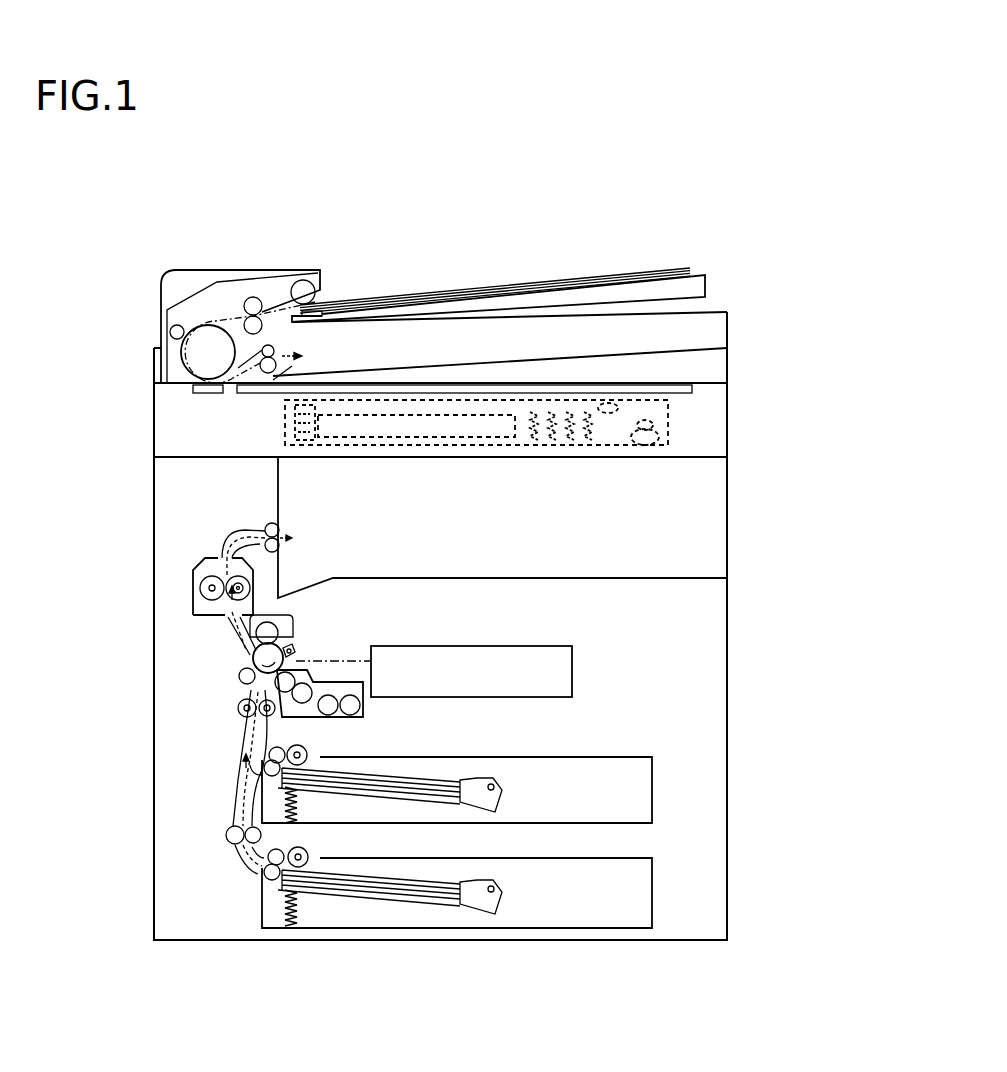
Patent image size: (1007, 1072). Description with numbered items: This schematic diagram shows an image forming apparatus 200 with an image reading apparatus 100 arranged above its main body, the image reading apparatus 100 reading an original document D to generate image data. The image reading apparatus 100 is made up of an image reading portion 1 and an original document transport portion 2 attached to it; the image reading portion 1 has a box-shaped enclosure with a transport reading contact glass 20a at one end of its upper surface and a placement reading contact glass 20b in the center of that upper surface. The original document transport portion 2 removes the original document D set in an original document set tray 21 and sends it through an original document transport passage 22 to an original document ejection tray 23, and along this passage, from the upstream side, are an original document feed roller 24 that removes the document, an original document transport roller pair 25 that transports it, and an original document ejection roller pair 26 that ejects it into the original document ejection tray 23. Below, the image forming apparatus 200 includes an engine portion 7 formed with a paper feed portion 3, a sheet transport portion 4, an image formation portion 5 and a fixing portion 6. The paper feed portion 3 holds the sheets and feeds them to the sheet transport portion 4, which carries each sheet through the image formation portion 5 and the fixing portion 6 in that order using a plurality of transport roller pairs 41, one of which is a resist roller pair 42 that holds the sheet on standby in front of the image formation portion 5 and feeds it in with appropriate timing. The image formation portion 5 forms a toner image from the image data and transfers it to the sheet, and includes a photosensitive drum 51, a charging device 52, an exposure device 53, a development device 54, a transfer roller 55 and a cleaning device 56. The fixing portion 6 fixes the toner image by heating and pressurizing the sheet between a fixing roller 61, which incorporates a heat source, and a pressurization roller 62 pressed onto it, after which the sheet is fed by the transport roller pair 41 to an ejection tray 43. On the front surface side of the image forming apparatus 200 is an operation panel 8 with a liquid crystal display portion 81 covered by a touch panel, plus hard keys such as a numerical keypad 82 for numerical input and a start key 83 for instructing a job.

The image forming apparatus 200 is at (135, 325).
The original document transport passage 22 is at (199, 323).
The original document transport roller pair 25 is at (253, 297).
The original document feed roller 24 is at (303, 280).
The original document ejection roller pair 26 is at (278, 372).
The original document D is at (561, 280).
The original document set tray 21 is at (698, 277).
The original document transport portion 2 is at (739, 331).
The original document ejection tray 23 is at (480, 360).
The image reading apparatus 100 is at (775, 310).
The image reading portion 1 is at (739, 399).
The transport reading contact glass 20a is at (203, 395).
The placement reading contact glass 20b is at (249, 395).
The operation panel 8 is at (680, 434).
The liquid crystal display portion 81 is at (396, 428).
The numerical keypad 82 is at (537, 446).
The start key 83 is at (652, 446).
The ejection tray 43 is at (450, 577).
The exposure device 53 is at (465, 652).
The engine portion 7 is at (92, 627).
The fixing portion 6 is at (182, 616).
The pressurization roller 62 is at (200, 590).
The fixing roller 61 is at (252, 588).
The transport roller pair 41 is at (266, 525).
The resist roller pair 42 is at (222, 731).
The image formation portion 5 is at (228, 671).
The photosensitive drum 51 is at (253, 655).
The cleaning device 56 is at (290, 620).
The charging device 52 is at (295, 652).
The transfer roller 55 is at (243, 681).
The development device 54 is at (363, 712).
The sheet transport portion 4 is at (212, 821).
The paper feed portion 3 is at (249, 909).